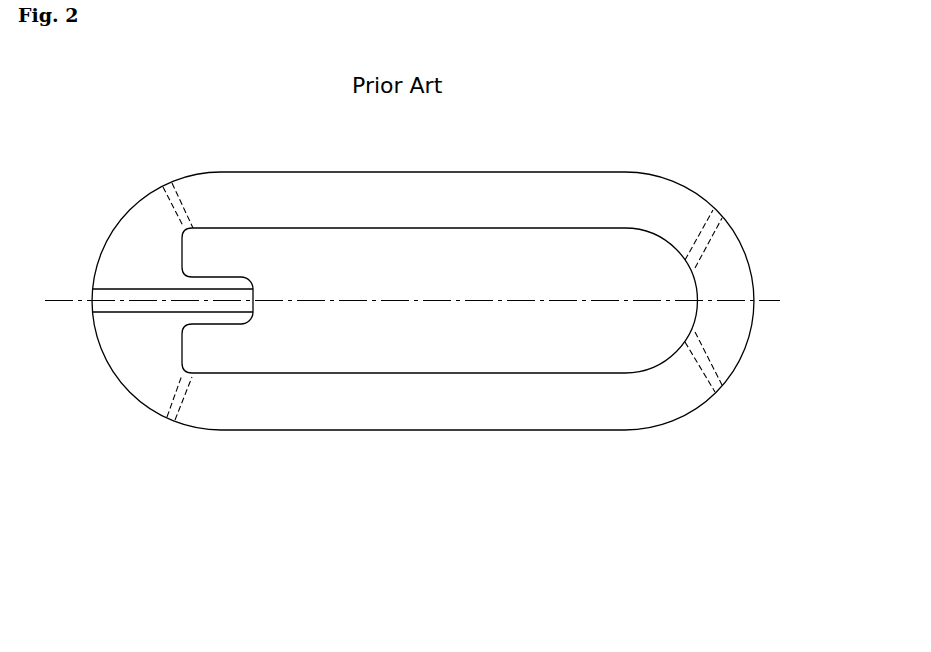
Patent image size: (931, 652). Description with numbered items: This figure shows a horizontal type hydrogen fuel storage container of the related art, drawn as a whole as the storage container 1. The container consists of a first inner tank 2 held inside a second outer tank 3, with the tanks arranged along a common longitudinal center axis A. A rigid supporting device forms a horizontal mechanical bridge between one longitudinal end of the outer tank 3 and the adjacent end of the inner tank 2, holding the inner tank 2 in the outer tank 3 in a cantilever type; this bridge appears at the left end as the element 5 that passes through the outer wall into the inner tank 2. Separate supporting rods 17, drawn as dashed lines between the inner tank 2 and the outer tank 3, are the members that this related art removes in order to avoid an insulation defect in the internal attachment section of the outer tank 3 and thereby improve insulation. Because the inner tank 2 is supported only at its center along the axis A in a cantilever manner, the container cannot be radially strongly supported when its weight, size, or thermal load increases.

The fuel rail / pressure vessel (prior art) 1 is at (434, 316).
The inner tank 2 is at (332, 374).
The outer tank 3 is at (583, 171).
The slit / slot 5 is at (137, 313).
The supporting rods 17 is at (190, 190).
The central axis A is at (60, 300).